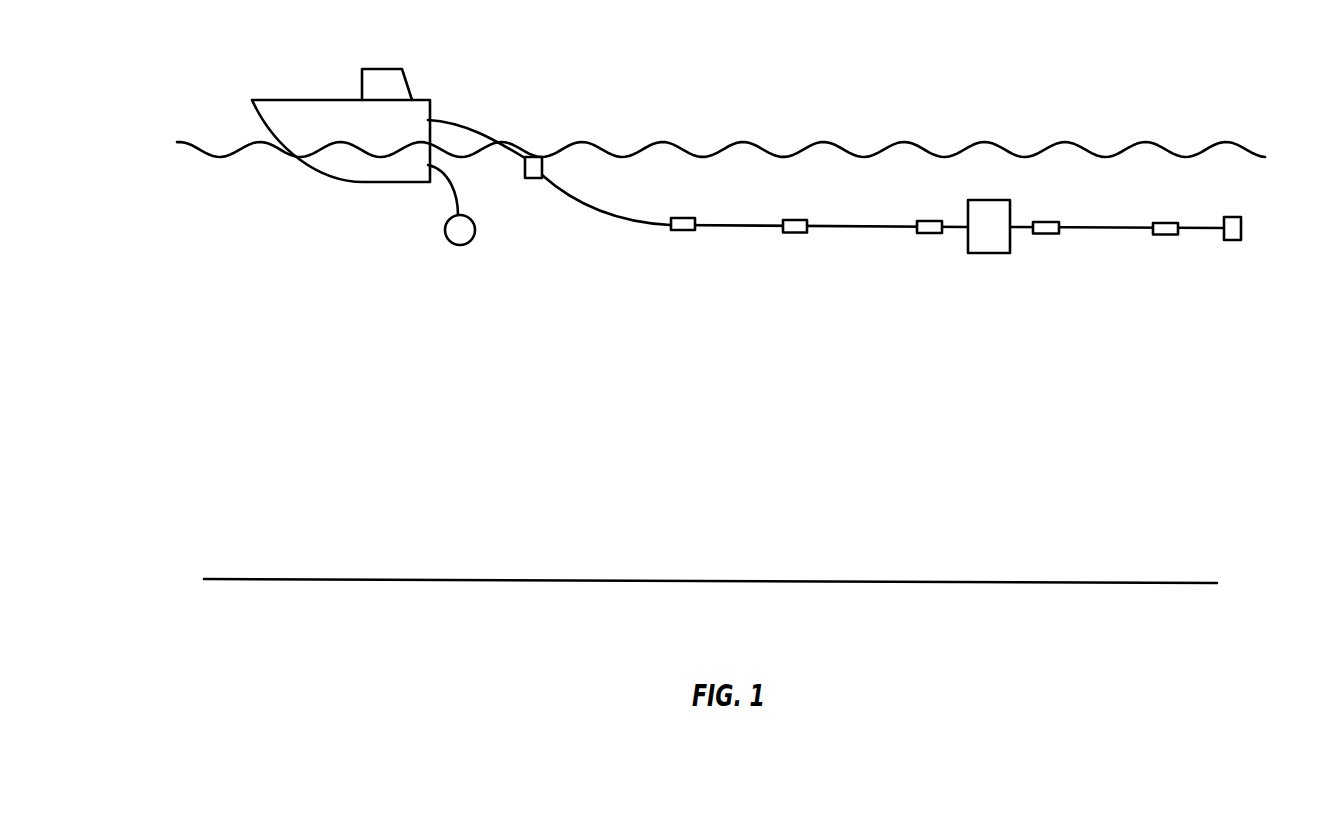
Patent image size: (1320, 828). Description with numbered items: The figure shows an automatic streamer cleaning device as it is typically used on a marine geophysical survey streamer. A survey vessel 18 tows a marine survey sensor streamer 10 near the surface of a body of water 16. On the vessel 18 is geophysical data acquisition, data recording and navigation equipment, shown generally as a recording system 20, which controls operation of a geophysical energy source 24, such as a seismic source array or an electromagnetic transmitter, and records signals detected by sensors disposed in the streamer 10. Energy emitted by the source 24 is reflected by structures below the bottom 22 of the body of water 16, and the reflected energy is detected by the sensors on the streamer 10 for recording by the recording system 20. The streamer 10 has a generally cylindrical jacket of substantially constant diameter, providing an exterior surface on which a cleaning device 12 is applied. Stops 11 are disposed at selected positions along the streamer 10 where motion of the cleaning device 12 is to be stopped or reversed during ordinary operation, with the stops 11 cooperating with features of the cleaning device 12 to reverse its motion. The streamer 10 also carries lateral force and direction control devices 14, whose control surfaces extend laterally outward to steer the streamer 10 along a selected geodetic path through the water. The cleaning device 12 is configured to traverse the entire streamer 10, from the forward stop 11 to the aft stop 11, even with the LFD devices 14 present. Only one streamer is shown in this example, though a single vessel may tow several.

The marine survey sensor streamer 10 is at (577, 200).
The stop 11 is at (533, 180).
The cleaning device 12 is at (988, 254).
The lateral force and direction control device 14 is at (683, 232).
The body of water 16 is at (905, 143).
The survey vessel 18 is at (423, 100).
The recording system 20 is at (372, 68).
The bottom of the body of water 22 is at (902, 582).
The geophysical energy source 24 is at (460, 247).